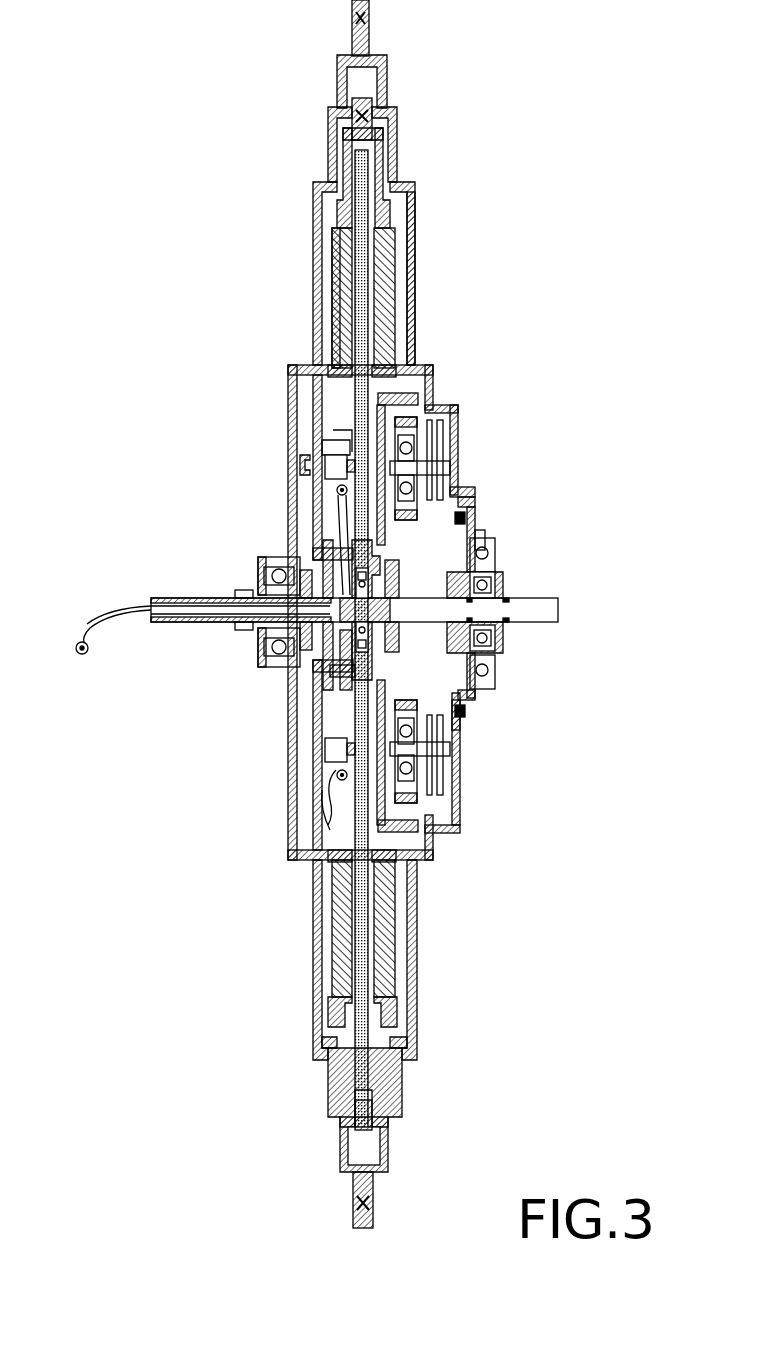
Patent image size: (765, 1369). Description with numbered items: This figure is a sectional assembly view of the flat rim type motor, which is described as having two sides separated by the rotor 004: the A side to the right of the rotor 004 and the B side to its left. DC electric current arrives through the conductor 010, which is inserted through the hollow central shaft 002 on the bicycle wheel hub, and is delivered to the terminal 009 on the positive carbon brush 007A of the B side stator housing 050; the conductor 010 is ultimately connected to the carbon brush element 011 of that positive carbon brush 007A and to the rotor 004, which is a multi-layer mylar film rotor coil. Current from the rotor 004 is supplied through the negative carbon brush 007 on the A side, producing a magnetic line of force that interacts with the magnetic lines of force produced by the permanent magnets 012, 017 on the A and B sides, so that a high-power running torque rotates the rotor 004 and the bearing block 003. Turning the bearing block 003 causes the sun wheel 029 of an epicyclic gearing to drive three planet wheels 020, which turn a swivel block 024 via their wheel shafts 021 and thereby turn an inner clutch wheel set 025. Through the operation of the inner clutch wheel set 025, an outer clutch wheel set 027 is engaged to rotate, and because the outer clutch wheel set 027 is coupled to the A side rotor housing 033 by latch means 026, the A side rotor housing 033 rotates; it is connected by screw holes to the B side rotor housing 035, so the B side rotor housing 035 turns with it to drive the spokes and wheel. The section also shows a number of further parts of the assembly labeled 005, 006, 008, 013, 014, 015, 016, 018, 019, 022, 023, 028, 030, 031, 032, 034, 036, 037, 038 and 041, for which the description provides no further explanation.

The hollow central shaft 002 is at (560, 610).
The bearing block 003 is at (355, 548).
The rotor 004 is at (362, 188).
The lower gear hub 005 is at (338, 690).
The bevel gear 006 is at (337, 562).
The negative carbon brush 007 is at (315, 760).
The positive carbon brush 007A is at (313, 468).
The sensor lead 008 is at (328, 825).
The terminal 009 is at (330, 470).
The conductor 010 is at (103, 605).
The carbon brush element 011 is at (352, 458).
The permanent magnet 012 is at (378, 325).
The outer housing wall 013 is at (385, 235).
The body housing 014 is at (383, 145).
The bearing housing 015 is at (420, 398).
The end fitting 016 is at (343, 130).
The permanent magnet 017 is at (340, 305).
The inner liner 018 is at (335, 228).
The left bearing 019 is at (265, 575).
The planet wheel 020 is at (412, 428).
The wheel shaft 021 is at (425, 468).
The lower bearing 022 is at (445, 800).
The upper bearing ball 023 is at (410, 462).
The swivel block 024 is at (420, 768).
The inner clutch wheel set 025 is at (492, 545).
The latch means 026 is at (465, 505).
The outer clutch wheel set 027 is at (482, 528).
The right bearing block 028 is at (497, 585).
The sun wheel 029 is at (458, 722).
The right lower bearing 030 is at (483, 668).
The end shaft 031 is at (368, 18).
The lower seal 032 is at (480, 700).
The A side rotor housing 033 is at (385, 85).
The lower bearing housing 034 is at (440, 833).
The B side rotor housing 035 is at (337, 77).
The left bearing spacer 036 is at (257, 660).
The lower hub sleeve 037 is at (340, 705).
The bottom coupling 038 is at (357, 1192).
The shaft pin 041 is at (507, 624).
The B side stator housing 050 is at (338, 155).